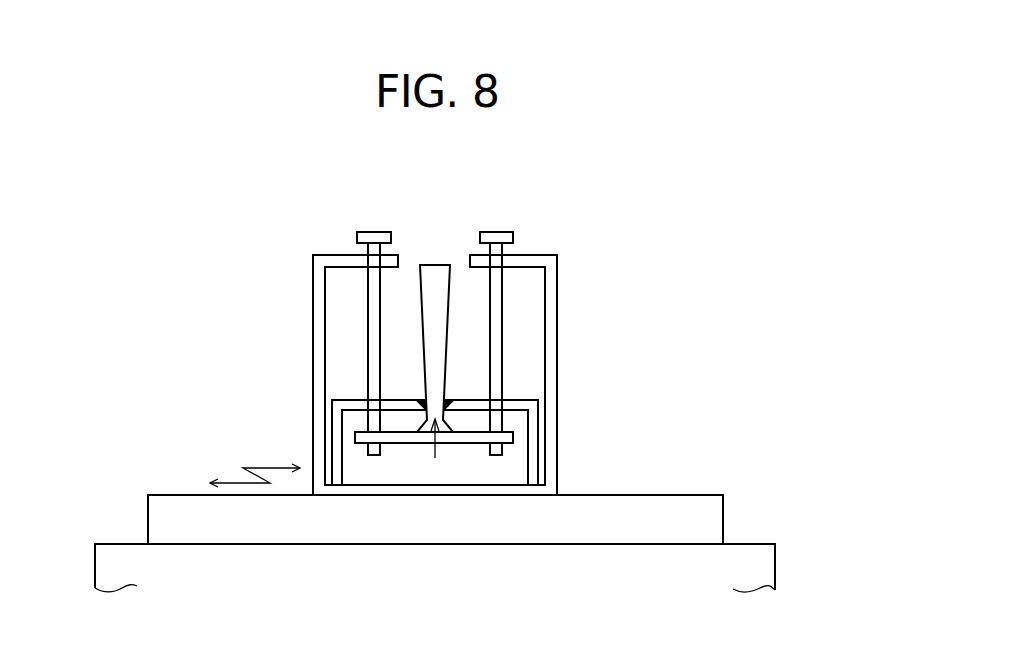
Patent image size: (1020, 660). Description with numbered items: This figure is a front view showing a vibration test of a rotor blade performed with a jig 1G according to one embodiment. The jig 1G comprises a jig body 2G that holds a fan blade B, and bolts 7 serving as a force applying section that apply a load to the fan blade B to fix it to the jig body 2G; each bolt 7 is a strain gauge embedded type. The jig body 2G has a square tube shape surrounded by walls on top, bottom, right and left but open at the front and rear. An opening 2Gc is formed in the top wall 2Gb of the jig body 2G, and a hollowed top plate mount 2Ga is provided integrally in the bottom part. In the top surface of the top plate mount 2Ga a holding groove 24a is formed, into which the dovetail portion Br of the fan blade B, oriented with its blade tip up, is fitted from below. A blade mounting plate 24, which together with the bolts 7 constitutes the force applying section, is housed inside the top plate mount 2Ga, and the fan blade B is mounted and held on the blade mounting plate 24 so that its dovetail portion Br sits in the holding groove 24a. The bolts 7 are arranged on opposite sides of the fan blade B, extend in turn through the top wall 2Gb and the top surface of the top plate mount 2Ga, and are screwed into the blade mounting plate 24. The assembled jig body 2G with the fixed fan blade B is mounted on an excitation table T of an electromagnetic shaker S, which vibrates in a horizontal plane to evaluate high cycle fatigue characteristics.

The jig 1G is at (661, 252).
The jig body 2G is at (474, 333).
The top plate mount 2Ga is at (552, 457).
The top wall 2Gb is at (338, 262).
The opening 2Gc is at (400, 261).
The bolts 7 is at (370, 298).
The blade mounting plate 24 is at (357, 438).
The holding groove 24a is at (432, 400).
The fan blade B is at (435, 278).
The dovetail portion Br is at (442, 423).
The electromagnetic shaker S is at (445, 582).
The excitation table T is at (595, 527).